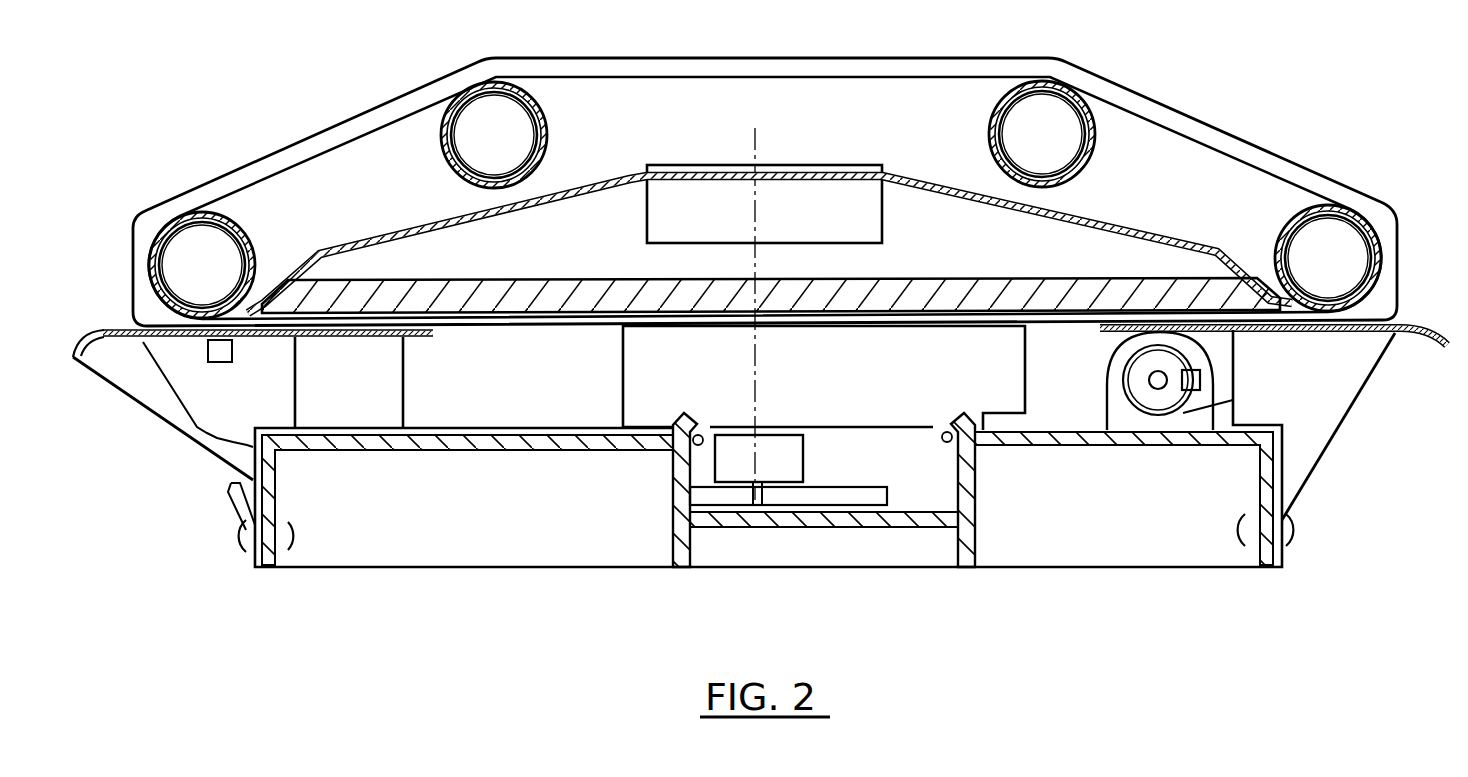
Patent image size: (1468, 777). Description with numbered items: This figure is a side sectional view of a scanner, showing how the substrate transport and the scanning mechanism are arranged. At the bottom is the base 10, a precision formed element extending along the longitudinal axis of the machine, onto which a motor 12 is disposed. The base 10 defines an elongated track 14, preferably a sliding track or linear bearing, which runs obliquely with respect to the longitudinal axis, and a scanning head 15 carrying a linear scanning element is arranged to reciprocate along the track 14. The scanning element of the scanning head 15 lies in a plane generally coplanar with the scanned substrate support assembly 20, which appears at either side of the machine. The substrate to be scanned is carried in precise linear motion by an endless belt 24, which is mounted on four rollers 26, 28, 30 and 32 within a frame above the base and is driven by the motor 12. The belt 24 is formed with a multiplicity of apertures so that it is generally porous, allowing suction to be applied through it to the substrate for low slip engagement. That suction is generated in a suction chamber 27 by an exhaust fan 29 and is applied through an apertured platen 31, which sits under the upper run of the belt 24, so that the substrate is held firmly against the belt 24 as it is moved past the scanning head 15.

The base 10 is at (1283, 518).
The motor 12 is at (1158, 386).
The elongated track 14 is at (673, 447).
The scanning head 15 is at (1007, 387).
The scanned substrate support assembly 20 is at (155, 383).
The endless belt 24 is at (1264, 168).
The roller 26 is at (1003, 92).
The suction chamber 27 is at (1101, 238).
The roller 28 is at (1350, 218).
The exhaust fan 29 is at (811, 192).
The roller 30 is at (171, 234).
The apertured platen 31 is at (1160, 288).
The roller 32 is at (528, 97).